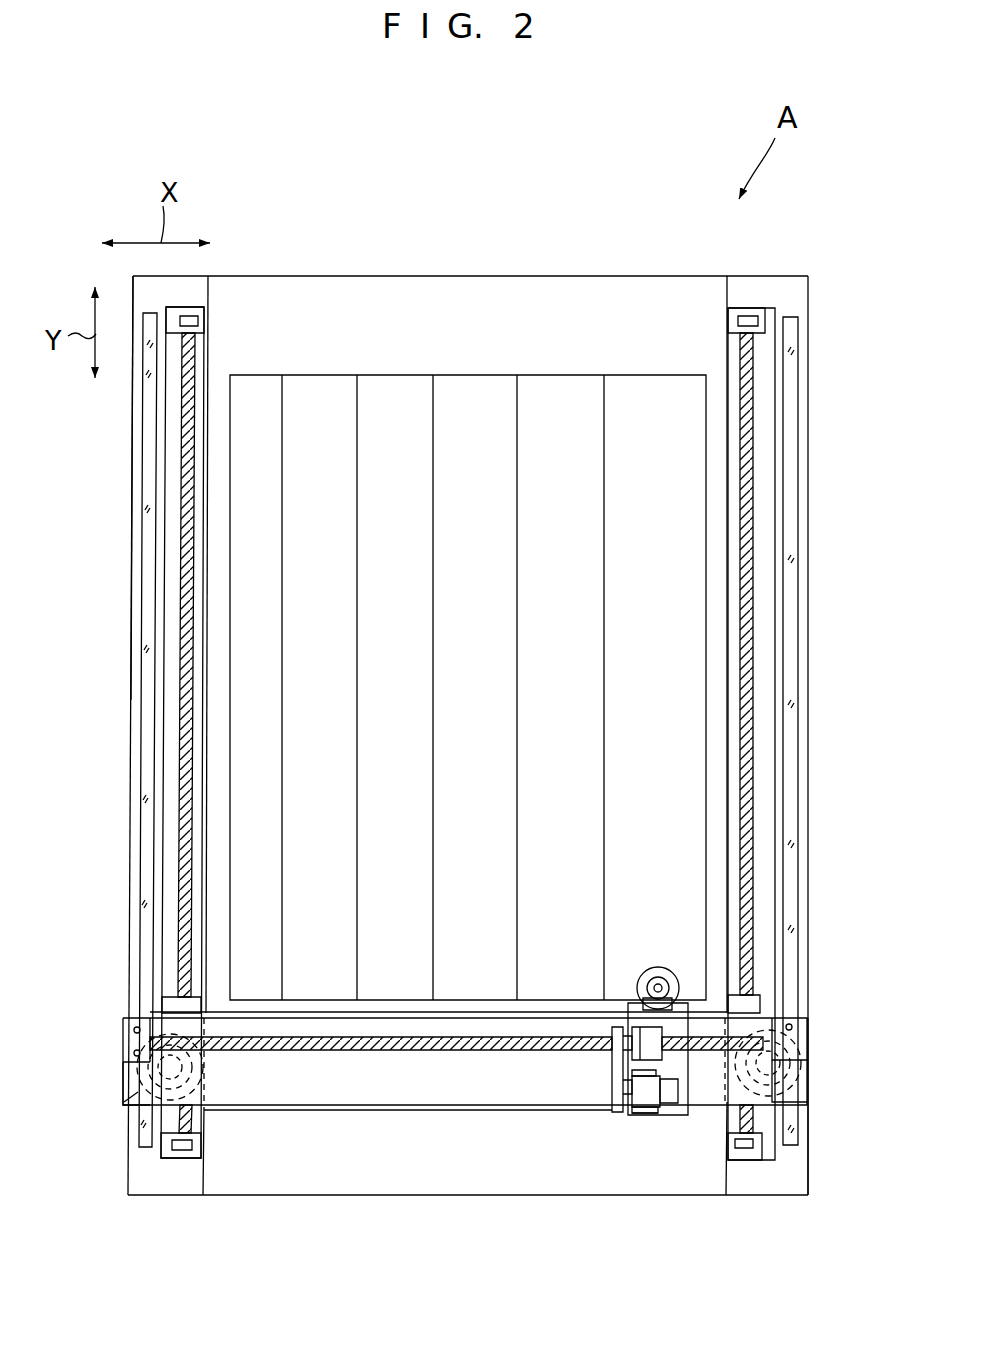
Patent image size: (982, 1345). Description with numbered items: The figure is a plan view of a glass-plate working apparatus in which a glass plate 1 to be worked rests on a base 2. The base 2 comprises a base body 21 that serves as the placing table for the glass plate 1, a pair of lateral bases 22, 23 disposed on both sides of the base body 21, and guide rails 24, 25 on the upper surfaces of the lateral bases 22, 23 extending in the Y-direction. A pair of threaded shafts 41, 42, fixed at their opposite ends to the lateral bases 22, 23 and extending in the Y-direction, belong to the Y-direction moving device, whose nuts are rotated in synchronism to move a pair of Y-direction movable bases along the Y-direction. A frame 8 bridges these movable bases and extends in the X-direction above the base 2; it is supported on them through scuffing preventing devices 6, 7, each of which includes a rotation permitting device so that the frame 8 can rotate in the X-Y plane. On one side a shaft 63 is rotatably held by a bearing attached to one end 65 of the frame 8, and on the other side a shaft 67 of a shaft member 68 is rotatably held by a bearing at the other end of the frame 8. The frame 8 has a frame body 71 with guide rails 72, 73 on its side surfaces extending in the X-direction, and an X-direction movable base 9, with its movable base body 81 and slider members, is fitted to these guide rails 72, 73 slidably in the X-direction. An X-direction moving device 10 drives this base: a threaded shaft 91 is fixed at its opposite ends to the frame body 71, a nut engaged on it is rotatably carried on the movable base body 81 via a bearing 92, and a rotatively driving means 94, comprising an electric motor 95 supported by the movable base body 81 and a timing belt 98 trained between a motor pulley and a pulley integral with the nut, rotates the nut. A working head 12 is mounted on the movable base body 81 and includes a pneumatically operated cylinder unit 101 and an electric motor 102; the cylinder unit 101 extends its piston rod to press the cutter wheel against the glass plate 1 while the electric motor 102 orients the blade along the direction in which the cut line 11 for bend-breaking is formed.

The glass plate 1 is at (678, 768).
The base 2 is at (556, 1180).
The scuffing preventing device 6 is at (810, 1089).
The scuffing preventing device 7 is at (124, 1078).
The frame 8 is at (358, 1115).
The X-direction movable base 9 is at (662, 1130).
The X-direction moving device 10 is at (650, 1094).
The cut line 11 is at (518, 436).
The working head 12 is at (650, 968).
The base body 21 is at (613, 290).
The lateral base 22 is at (795, 925).
The lateral base 23 is at (134, 889).
The guide rail 24 is at (791, 683).
The guide rail 25 is at (150, 718).
The threaded shaft 41 is at (748, 637).
The threaded shaft 42 is at (183, 632).
The shaft 63 is at (806, 1100).
The one end of the frame 65 is at (806, 1070).
The shaft 67 is at (203, 1070).
The shaft member 68 is at (119, 1107).
The frame body 71 is at (489, 1101).
The guide rail 72 is at (441, 1113).
The guide rail 73 is at (468, 1010).
The movable base body 81 is at (680, 1080).
The threaded shaft 91 is at (533, 1050).
The bearing 92 is at (626, 1030).
The rotatively driving means 94 is at (607, 1121).
The electric motor 95 is at (640, 1117).
The timing belt 98 is at (612, 1076).
The pneumatically operated cylinder unit 101 is at (680, 990).
The electric motor 102 is at (640, 1037).